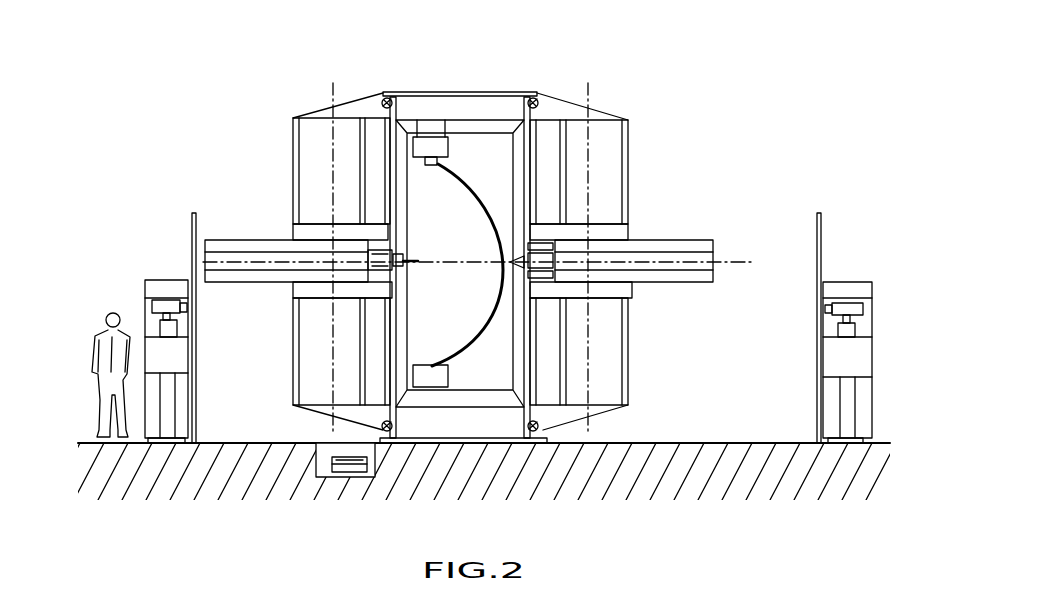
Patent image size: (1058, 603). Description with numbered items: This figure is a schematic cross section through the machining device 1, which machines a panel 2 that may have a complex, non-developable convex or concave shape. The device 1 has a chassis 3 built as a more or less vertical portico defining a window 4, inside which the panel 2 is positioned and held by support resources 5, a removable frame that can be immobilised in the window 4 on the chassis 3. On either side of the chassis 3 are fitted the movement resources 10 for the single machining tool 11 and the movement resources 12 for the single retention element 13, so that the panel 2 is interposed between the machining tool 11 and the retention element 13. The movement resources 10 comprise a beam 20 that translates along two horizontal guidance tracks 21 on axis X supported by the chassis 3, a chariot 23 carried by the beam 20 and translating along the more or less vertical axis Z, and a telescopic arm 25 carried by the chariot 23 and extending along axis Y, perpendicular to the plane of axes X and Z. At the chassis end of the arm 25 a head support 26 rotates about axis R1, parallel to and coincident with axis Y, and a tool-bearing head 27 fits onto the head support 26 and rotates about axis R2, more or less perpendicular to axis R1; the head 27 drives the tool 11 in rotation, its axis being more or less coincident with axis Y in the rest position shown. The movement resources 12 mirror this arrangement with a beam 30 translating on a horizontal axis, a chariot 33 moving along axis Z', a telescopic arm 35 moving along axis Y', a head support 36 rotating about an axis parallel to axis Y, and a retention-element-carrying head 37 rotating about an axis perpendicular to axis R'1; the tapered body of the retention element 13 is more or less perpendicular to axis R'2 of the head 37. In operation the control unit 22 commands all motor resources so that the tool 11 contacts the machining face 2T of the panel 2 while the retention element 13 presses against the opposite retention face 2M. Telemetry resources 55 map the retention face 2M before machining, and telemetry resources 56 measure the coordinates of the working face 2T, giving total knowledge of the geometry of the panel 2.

The machining device 1 is at (742, 134).
The panel 2 is at (455, 175).
The retention face 2M is at (471, 196).
The machining face 2T is at (473, 197).
The chassis 3 is at (497, 92).
The window 4 is at (493, 376).
The support resources 5 is at (437, 143).
The movement resources for the tool 10 is at (306, 228).
The machining tool 11 is at (418, 265).
The movement resources for the retention element 12 is at (620, 229).
The retention element 13 is at (512, 256).
The beam 20 is at (293, 150).
The guidance tracks 21 is at (384, 100).
The control unit 22 is at (165, 290).
The chariot 23 is at (293, 232).
The telescopic arm 25 is at (275, 290).
The head support 26 is at (383, 245).
The tool-bearing head 27 is at (400, 248).
The beam 30 is at (632, 133).
The chariot 33 is at (632, 232).
The telescopic arm 35 is at (657, 285).
The head support 36 is at (570, 270).
The retention-element-carrying head 37 is at (542, 276).
The telemetry resources 55 is at (860, 353).
The telemetry resources 56 is at (190, 338).
The axis Y is at (477, 225).
The axis Y' is at (747, 239).
The axis Z is at (295, 259).
The axis Z' is at (630, 259).
The axis of rotation R1 is at (343, 248).
The axis of rotation R2 is at (390, 310).
The axis of rotation R'1 is at (582, 224).
The axis of rotation R'2 is at (520, 316).